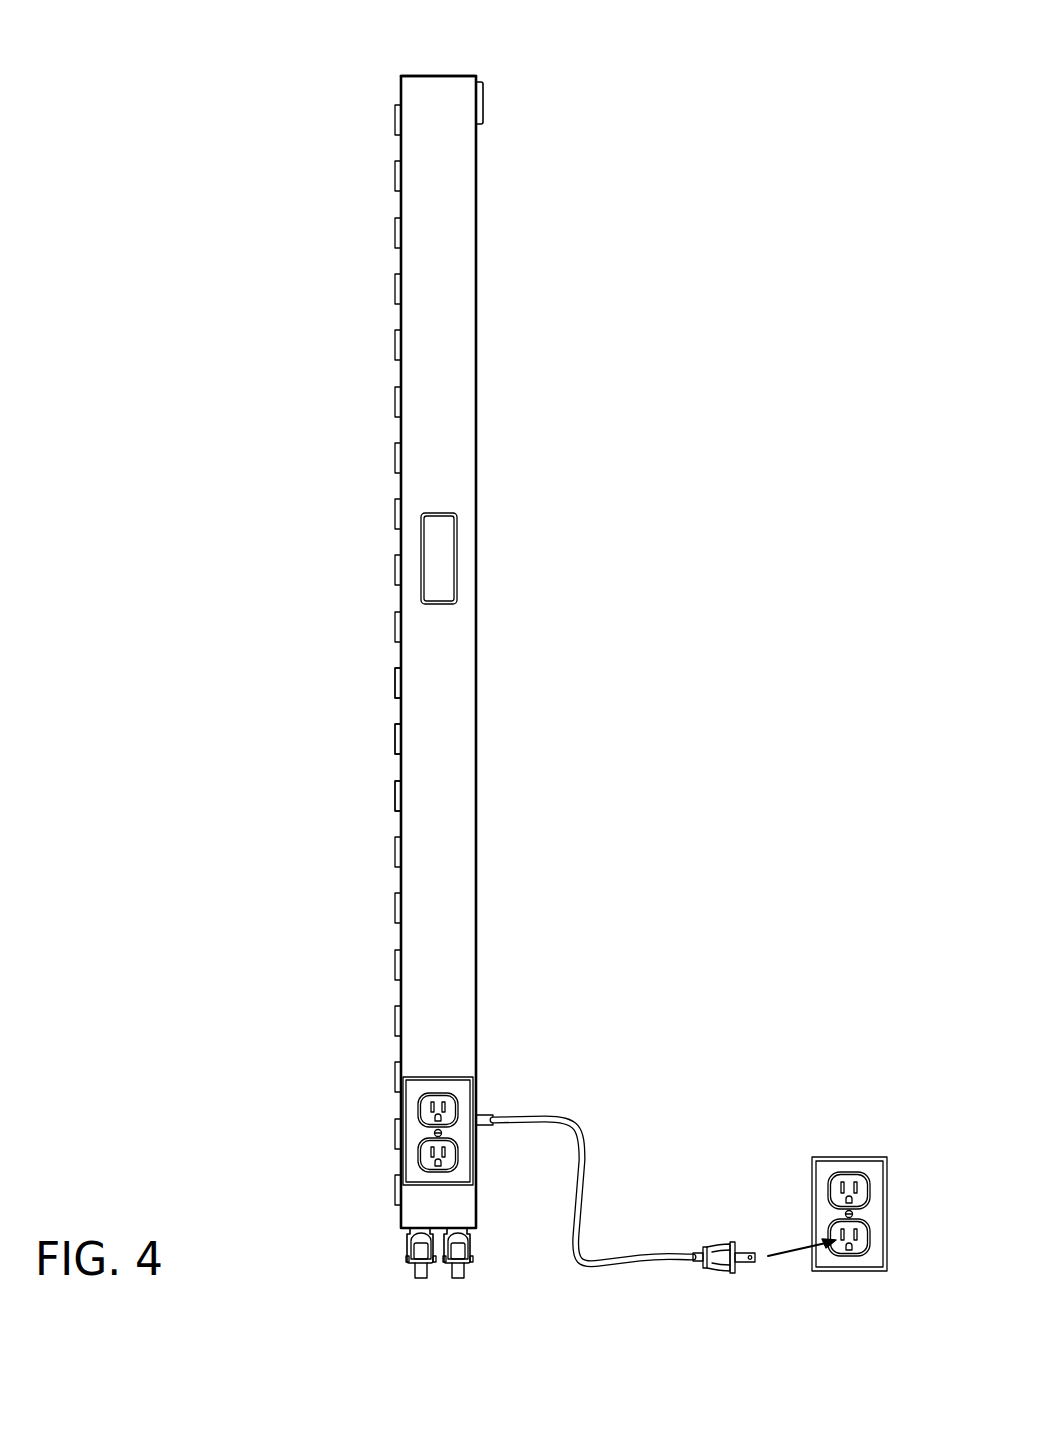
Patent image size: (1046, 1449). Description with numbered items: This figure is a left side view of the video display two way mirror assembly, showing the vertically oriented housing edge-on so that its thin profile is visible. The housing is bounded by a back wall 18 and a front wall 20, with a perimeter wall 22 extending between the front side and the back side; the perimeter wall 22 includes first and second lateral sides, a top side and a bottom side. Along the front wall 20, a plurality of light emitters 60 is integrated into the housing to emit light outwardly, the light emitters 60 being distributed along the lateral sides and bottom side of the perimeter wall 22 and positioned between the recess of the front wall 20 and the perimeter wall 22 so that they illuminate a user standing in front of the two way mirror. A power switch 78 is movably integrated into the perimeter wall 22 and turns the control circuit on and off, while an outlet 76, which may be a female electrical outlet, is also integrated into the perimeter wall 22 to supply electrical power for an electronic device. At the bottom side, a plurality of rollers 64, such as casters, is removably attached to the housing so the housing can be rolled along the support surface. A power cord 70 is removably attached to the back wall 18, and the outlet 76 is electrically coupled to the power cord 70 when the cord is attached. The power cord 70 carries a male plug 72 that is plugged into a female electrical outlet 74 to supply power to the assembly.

The back wall 18 is at (478, 302).
The front wall 20 is at (400, 311).
The perimeter wall 22 is at (447, 100).
The light emitters 60 is at (400, 795).
The rollers 64 is at (427, 1278).
The power cord 70 is at (547, 1117).
The male plug 72 is at (720, 1255).
The female electrical outlet 74 is at (848, 1157).
The outlet 76 is at (438, 1077).
The power switch 78 is at (440, 547).